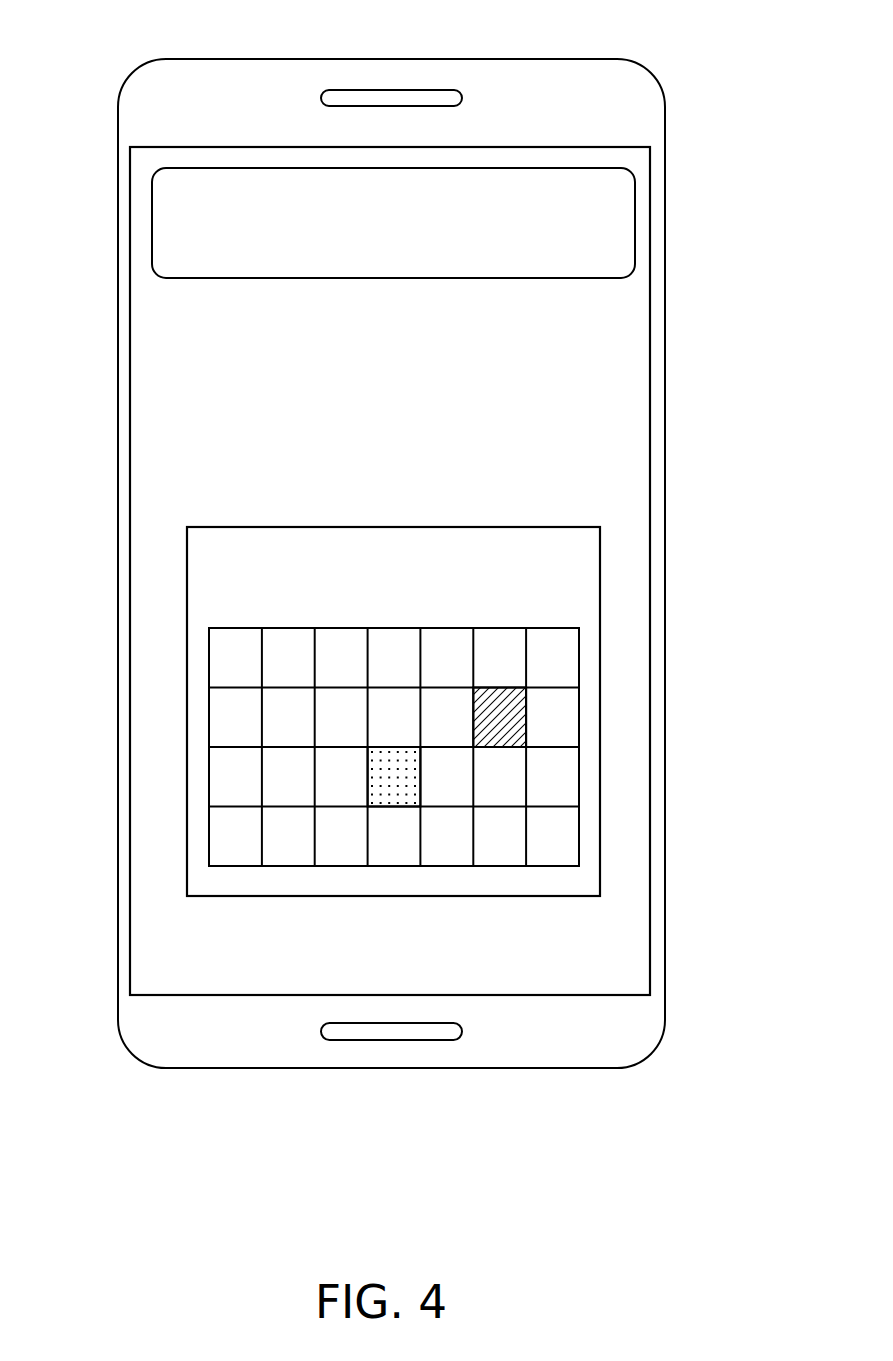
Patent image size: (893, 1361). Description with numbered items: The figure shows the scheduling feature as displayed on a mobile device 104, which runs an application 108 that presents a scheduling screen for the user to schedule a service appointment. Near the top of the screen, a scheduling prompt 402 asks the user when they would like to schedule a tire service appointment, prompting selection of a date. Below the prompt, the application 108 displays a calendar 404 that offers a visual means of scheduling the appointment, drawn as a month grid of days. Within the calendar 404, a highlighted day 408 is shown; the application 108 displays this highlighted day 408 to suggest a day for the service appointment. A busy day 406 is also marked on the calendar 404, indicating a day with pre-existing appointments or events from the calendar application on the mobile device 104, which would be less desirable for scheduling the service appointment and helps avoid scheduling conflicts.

The mobile device 104 is at (207, 100).
The application 108 is at (187, 398).
The scheduling prompt 402 is at (613, 248).
The calendar 404 is at (555, 578).
The busy day 406 is at (507, 720).
The highlighted day 408 is at (412, 785).